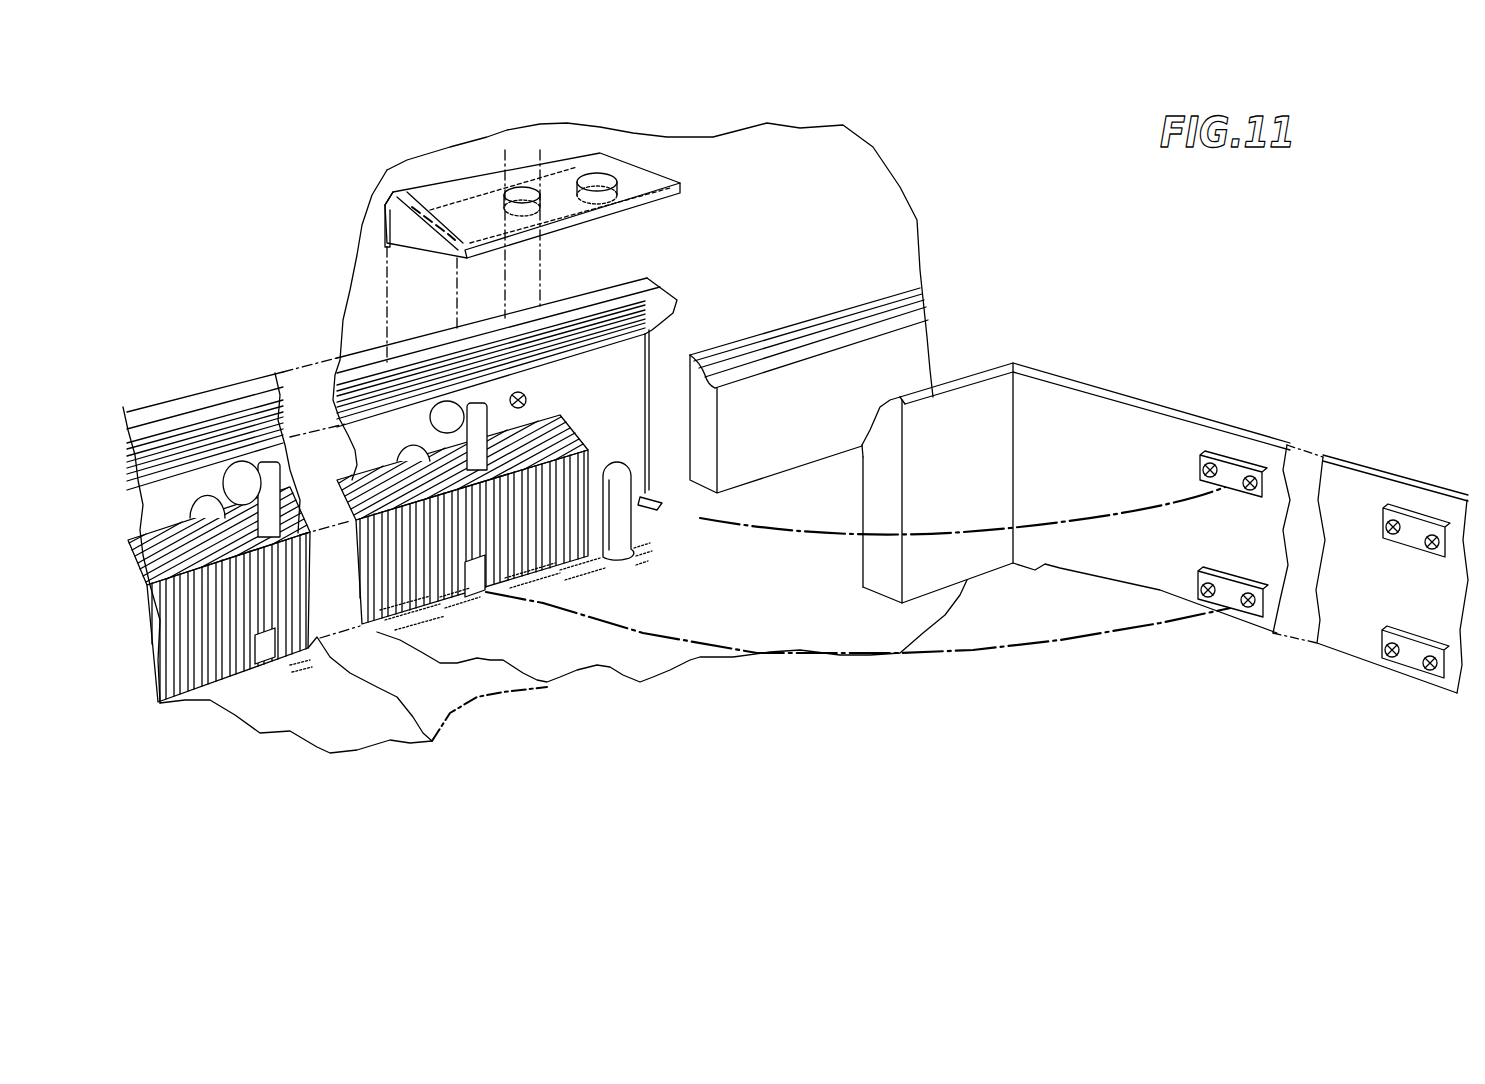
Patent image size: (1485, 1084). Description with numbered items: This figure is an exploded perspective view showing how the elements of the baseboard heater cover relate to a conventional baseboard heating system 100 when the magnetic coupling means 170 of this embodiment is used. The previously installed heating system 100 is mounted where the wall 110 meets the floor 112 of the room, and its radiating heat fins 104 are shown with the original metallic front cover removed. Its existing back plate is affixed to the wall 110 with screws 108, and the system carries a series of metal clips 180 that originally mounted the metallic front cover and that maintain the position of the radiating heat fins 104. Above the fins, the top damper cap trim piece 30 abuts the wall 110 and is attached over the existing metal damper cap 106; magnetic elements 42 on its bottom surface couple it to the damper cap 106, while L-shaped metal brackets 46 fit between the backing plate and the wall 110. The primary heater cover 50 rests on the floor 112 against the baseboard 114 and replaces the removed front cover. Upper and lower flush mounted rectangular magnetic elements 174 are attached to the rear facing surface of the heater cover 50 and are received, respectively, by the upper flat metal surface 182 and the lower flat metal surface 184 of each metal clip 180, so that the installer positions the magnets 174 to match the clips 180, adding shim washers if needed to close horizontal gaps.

The top damper cap trim piece 30 is at (653, 163).
The magnetic element 42 is at (590, 172).
The L-shaped metal bracket 46 is at (392, 207).
The primary heater cover 50 is at (1060, 367).
The baseboard heating system 100 is at (571, 485).
The radiating heat fins 104 is at (218, 680).
The damper cap 106 is at (665, 314).
The screws 108 is at (512, 396).
The wall 110 is at (857, 157).
The floor 112 is at (463, 647).
The baseboard 114 is at (877, 318).
The magnetic coupling means 170 is at (1222, 455).
The magnetic elements 174 is at (1230, 587).
The metal clips 180 is at (410, 423).
The upper flat metal surface 182 is at (481, 432).
The lower flat metal surface 184 is at (266, 650).